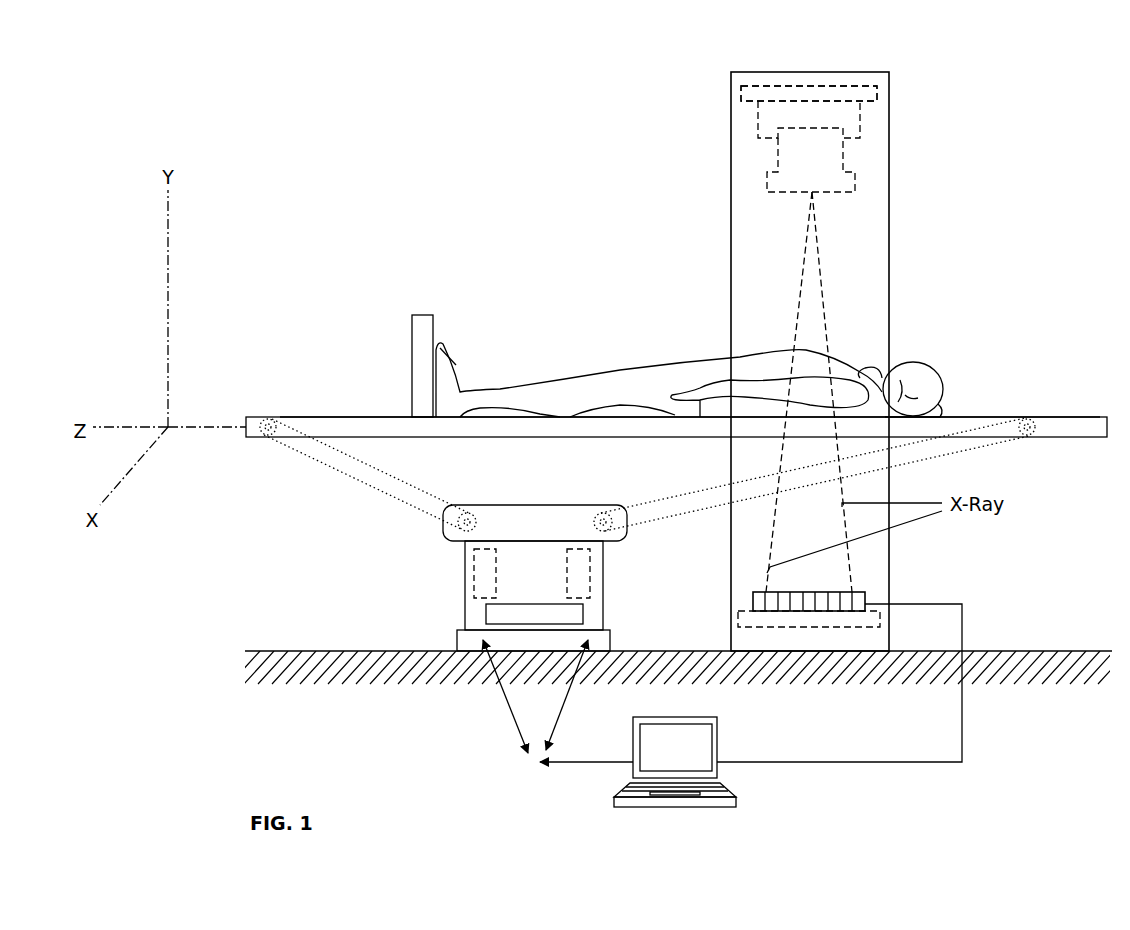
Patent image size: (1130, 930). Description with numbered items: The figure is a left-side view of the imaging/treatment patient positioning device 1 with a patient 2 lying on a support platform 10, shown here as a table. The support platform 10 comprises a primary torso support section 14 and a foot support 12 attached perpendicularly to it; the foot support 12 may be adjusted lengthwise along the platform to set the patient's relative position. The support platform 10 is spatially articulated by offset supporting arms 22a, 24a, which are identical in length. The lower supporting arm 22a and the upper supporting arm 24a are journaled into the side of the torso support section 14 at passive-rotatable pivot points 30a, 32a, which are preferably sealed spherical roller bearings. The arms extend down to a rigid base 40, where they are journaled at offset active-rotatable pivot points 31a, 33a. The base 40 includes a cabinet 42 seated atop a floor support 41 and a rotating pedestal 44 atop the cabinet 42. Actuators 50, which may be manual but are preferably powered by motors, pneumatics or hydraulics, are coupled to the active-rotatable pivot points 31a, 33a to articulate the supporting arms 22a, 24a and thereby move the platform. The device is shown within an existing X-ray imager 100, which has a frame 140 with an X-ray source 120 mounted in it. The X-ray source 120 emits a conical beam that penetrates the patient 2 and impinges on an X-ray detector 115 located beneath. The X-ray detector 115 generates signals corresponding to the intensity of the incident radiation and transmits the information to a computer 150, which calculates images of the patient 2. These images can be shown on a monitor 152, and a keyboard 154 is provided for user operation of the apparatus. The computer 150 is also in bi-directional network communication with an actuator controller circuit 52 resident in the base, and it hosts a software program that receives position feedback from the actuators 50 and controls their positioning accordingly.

The imaging/treatment patient positioning device 1 is at (527, 250).
The patient 2 is at (607, 388).
The support platform 10 is at (386, 416).
The foot support 12 is at (423, 365).
The primary torso support section 14 is at (370, 425).
The lower supporting arm 22a is at (368, 472).
The upper supporting arm 24a is at (707, 510).
The passive-rotatable pivot point 30a is at (268, 437).
The active-rotatable pivot point 31a is at (462, 518).
The passive-rotatable pivot point 32a is at (1032, 433).
The active-rotatable pivot point 33a is at (606, 530).
The rigid base 40 is at (443, 570).
The floor support 41 is at (470, 643).
The cabinet 42 is at (603, 590).
The rotating pedestal 44 is at (535, 523).
The actuator 50 is at (478, 568).
The actuator controller circuit 52 is at (563, 617).
The X-ray imager 100 is at (810, 72).
The X-ray detector 115 is at (853, 602).
The X-ray source 120 is at (775, 93).
The frame 140 is at (889, 122).
The computer 150 is at (747, 760).
The monitor 152 is at (695, 752).
The keyboard 154 is at (628, 784).